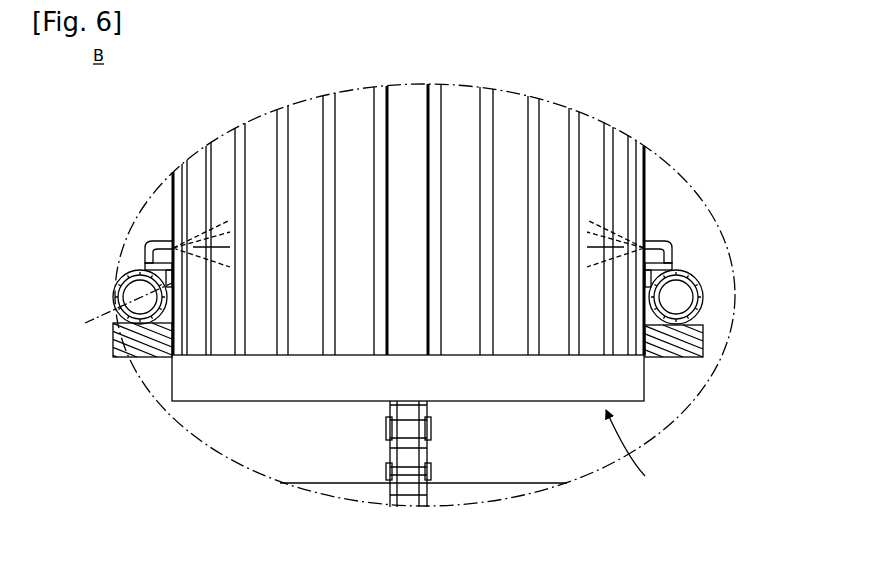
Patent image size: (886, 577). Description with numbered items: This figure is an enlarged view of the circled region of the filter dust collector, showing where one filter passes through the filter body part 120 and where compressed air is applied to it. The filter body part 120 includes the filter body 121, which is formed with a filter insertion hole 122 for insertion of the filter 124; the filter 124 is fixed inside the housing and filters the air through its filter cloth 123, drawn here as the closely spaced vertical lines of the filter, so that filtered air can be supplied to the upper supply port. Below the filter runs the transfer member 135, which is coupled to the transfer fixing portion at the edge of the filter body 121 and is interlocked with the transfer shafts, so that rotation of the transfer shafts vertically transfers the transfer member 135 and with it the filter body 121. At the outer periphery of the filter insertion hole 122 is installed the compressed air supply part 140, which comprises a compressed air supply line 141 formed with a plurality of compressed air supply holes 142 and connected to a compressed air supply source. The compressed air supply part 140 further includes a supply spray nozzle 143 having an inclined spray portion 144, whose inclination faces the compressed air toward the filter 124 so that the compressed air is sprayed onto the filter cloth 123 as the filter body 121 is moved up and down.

The filter body part 120 is at (645, 476).
The filter body 121 is at (703, 333).
The filter insertion hole 122 is at (640, 342).
The filter cloth 123 is at (642, 203).
The filter 124 is at (635, 382).
The transfer member 135 is at (400, 428).
The compressed air supply part 140 is at (102, 268).
The compressed air supply line 141 is at (117, 295).
The compressed air supply hole 142 is at (138, 263).
The supply spray nozzle 143 is at (153, 260).
The inclined spray portion 144 is at (118, 321).